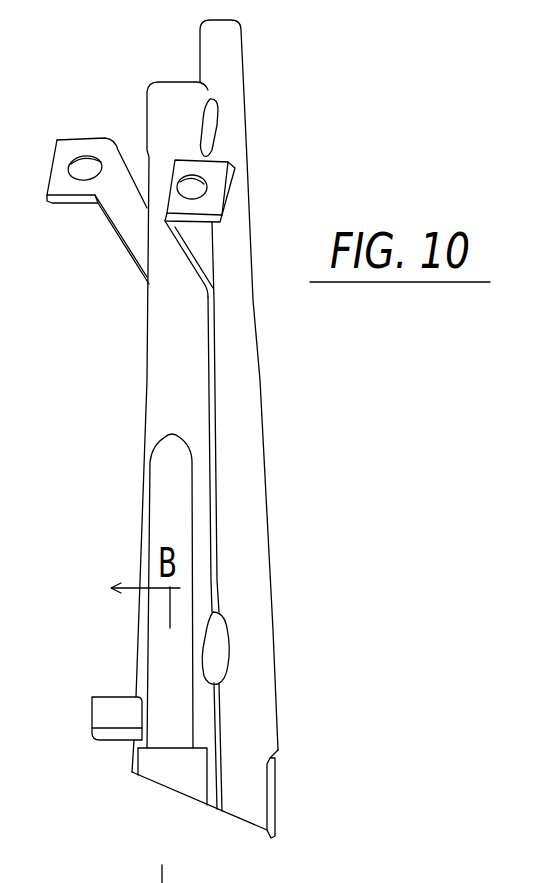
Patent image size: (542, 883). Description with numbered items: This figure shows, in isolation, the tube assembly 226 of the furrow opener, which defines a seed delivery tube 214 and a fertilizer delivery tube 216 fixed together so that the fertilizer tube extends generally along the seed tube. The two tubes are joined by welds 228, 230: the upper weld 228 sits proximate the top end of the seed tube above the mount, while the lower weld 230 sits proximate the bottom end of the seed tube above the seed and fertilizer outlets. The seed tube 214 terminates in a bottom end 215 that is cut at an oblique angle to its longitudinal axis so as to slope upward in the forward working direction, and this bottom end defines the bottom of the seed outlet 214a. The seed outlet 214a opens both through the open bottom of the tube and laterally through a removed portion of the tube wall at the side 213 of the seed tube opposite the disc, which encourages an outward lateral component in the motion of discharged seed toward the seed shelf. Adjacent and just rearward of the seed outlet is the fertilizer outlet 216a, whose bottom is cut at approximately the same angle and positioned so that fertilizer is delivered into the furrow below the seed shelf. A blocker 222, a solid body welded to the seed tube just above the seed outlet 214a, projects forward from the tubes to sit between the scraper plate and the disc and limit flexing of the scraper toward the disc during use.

The slot 213 is at (174, 672).
The seed delivery tube 214 is at (165, 360).
The seed outlet 214a is at (170, 782).
The bottom end of the seed tube 215 is at (182, 802).
The fertilizer delivery tube 216 is at (250, 422).
The fertilizer outlet 216a is at (276, 800).
The blocker 222 is at (113, 717).
The tube assembly 226 is at (61, 128).
The weld 228 is at (217, 128).
The weld 230 is at (218, 642).